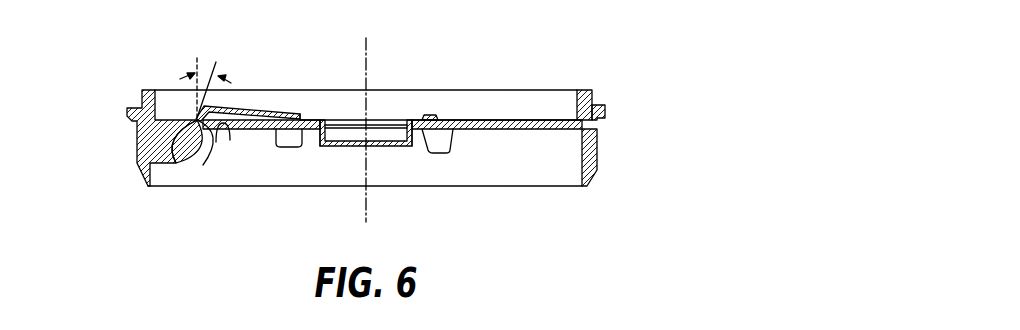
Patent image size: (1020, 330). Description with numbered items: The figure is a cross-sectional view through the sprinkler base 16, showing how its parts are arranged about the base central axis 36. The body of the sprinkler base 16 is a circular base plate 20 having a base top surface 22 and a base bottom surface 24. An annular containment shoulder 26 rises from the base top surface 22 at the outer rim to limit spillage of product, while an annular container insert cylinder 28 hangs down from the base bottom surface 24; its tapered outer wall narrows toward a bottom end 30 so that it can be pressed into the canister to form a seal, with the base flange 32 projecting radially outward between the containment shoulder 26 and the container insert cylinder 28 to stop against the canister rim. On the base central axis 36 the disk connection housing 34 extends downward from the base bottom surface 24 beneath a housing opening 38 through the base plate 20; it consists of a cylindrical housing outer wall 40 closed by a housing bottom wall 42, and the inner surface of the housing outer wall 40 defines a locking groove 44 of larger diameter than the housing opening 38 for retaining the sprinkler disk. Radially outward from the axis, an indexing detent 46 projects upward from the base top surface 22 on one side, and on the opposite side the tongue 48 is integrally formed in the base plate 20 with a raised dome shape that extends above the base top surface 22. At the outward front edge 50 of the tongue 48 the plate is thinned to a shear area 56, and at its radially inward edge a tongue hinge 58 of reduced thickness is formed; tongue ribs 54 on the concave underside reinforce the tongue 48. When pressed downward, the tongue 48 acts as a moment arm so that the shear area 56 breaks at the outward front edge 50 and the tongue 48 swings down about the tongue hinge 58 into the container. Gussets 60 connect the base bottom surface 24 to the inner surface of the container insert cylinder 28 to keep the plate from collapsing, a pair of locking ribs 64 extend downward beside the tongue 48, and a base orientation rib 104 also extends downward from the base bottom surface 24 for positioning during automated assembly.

The sprinkler base 16 is at (630, 70).
The base plate 20 is at (525, 120).
The base top surface 22 is at (366, 61).
The base bottom surface 24 is at (508, 129).
The containment shoulder 26 is at (585, 90).
The container insert cylinder 28 is at (598, 153).
The bottom end 30 is at (568, 186).
The base flange 32 is at (606, 110).
The disk connection housing 34 is at (411, 146).
The base central axis 36 is at (367, 63).
The housing opening 38 is at (337, 120).
The housing outer wall 40 is at (307, 129).
The housing bottom wall 42 is at (358, 146).
The locking groove 44 is at (399, 120).
The indexing detent 46 is at (432, 117).
The tongue 48 is at (234, 107).
The outward front edge 50 is at (181, 150).
The tongue ribs 54 is at (230, 140).
The shear area 56 is at (192, 165).
The tongue hinge 58 is at (300, 118).
The gussets 60 is at (215, 138).
The locking ribs 64 is at (276, 143).
The base orientation rib 104 is at (446, 153).